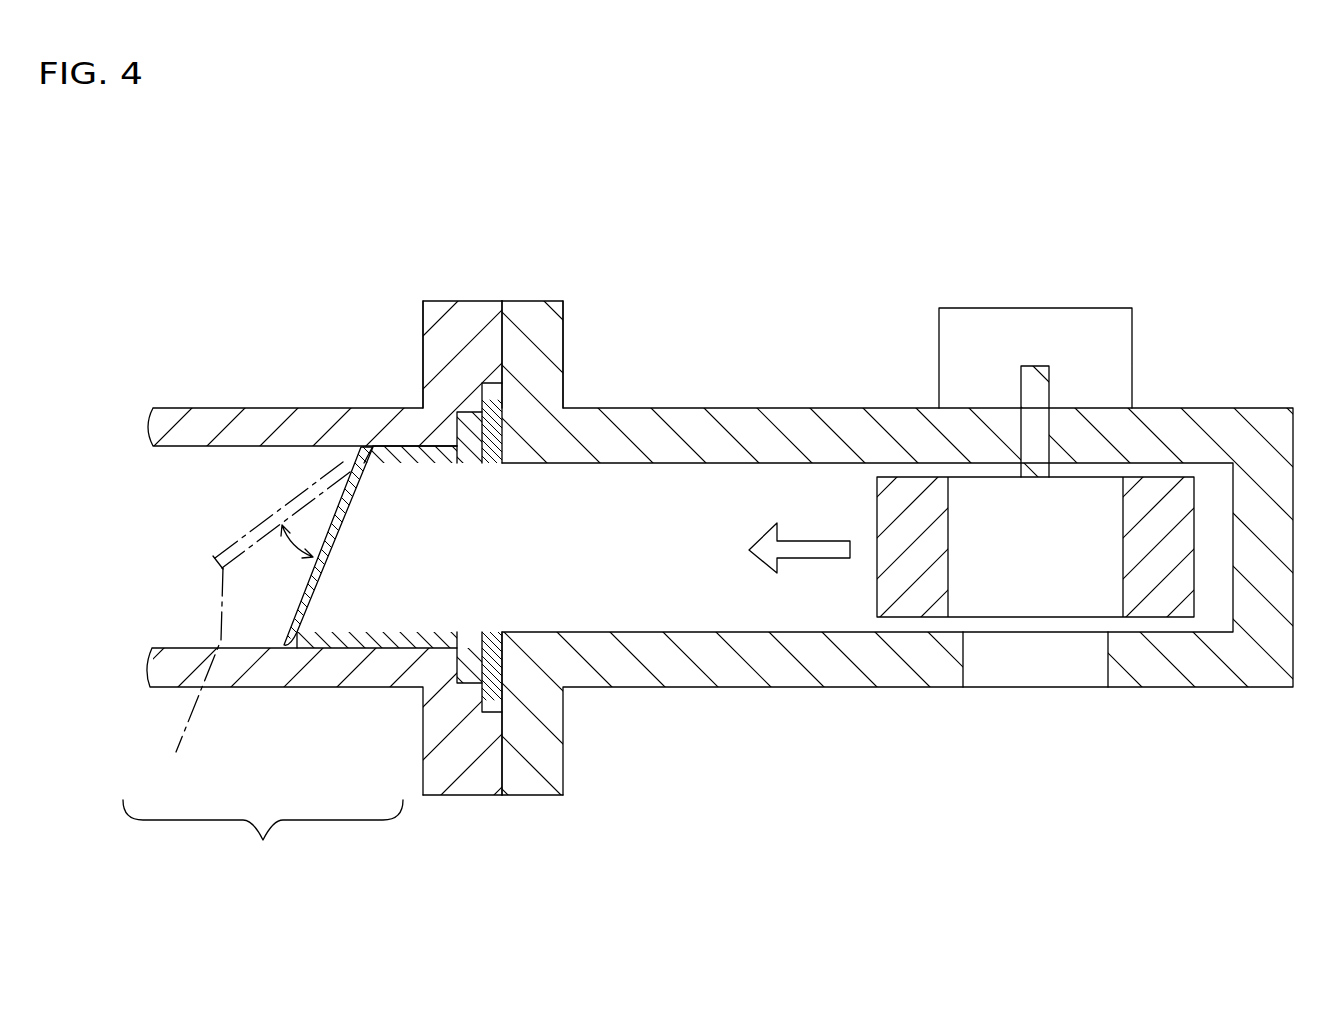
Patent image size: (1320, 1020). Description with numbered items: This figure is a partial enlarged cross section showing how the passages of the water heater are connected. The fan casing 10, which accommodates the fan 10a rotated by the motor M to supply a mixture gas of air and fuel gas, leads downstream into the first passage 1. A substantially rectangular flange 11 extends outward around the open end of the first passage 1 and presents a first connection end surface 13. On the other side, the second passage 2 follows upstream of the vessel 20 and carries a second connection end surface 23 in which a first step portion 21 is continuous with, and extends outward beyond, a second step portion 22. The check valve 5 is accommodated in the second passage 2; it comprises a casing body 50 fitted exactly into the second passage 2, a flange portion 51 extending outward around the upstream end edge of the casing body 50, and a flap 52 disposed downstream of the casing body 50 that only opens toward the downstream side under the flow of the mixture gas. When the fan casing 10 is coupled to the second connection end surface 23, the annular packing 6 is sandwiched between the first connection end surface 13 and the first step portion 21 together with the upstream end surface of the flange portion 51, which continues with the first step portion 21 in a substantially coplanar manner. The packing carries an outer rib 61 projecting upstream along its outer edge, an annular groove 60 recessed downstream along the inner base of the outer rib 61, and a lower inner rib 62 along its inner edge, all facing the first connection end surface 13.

The first passage 1 is at (780, 407).
The second passage 2 is at (237, 407).
The check valve 5 is at (263, 840).
The annular packing 6 is at (505, 653).
The fan casing 10 is at (1260, 660).
The fan 10a is at (1160, 590).
The flange 11 is at (563, 347).
The first connection end surface 13 is at (491, 316).
The vessel 20 is at (197, 506).
The first step portion 21 is at (481, 396).
The second step portion 22 is at (458, 432).
The second connection end surface 23 is at (518, 350).
The casing body 50 is at (342, 647).
The flange portion 51 is at (455, 660).
The flap 52 is at (307, 560).
The annular groove 60 is at (503, 683).
The outer rib 61 is at (503, 687).
The inner rib 62 is at (507, 648).
The motor M is at (1090, 330).